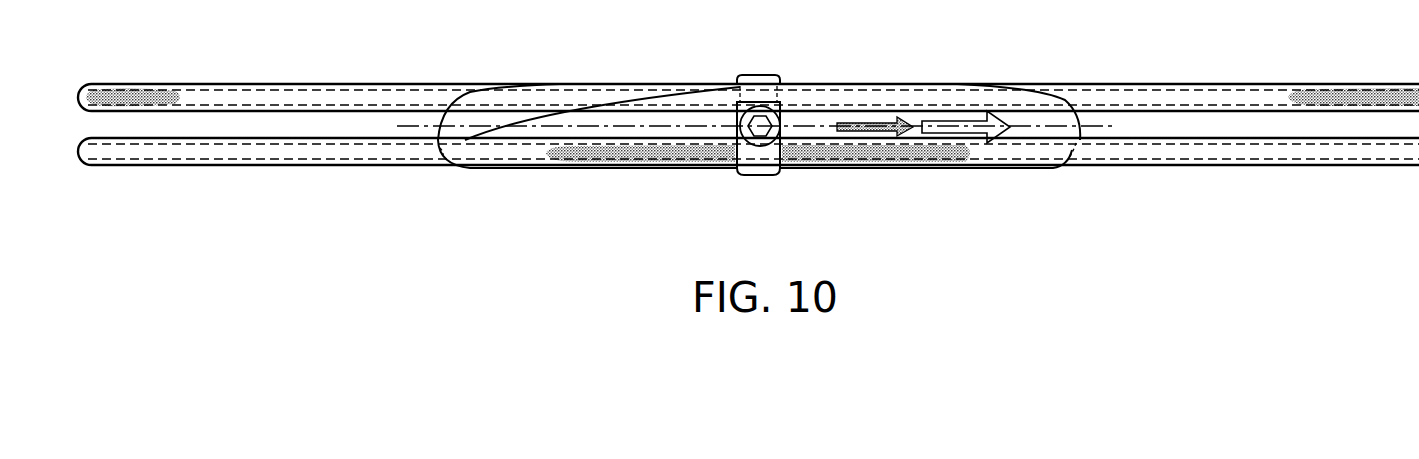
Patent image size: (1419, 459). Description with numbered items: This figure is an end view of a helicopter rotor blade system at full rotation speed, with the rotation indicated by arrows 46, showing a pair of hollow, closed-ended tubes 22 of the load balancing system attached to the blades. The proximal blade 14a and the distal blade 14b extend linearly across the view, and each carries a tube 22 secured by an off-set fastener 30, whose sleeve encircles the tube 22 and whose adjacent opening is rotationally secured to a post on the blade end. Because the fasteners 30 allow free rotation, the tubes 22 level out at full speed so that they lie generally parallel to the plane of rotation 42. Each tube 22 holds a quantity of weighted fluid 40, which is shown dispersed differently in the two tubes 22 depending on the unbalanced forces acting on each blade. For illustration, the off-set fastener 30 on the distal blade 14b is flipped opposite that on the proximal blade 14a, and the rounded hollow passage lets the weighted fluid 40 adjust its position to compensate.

The tubes 22 is at (301, 83).
The weighted fluid 40 is at (122, 82).
The distal blade 14b is at (527, 100).
The proximal blade 14a is at (922, 100).
The off-set fastener 30 is at (779, 176).
The arrows 46 is at (912, 140).
The plane of rotation 42 is at (1113, 128).